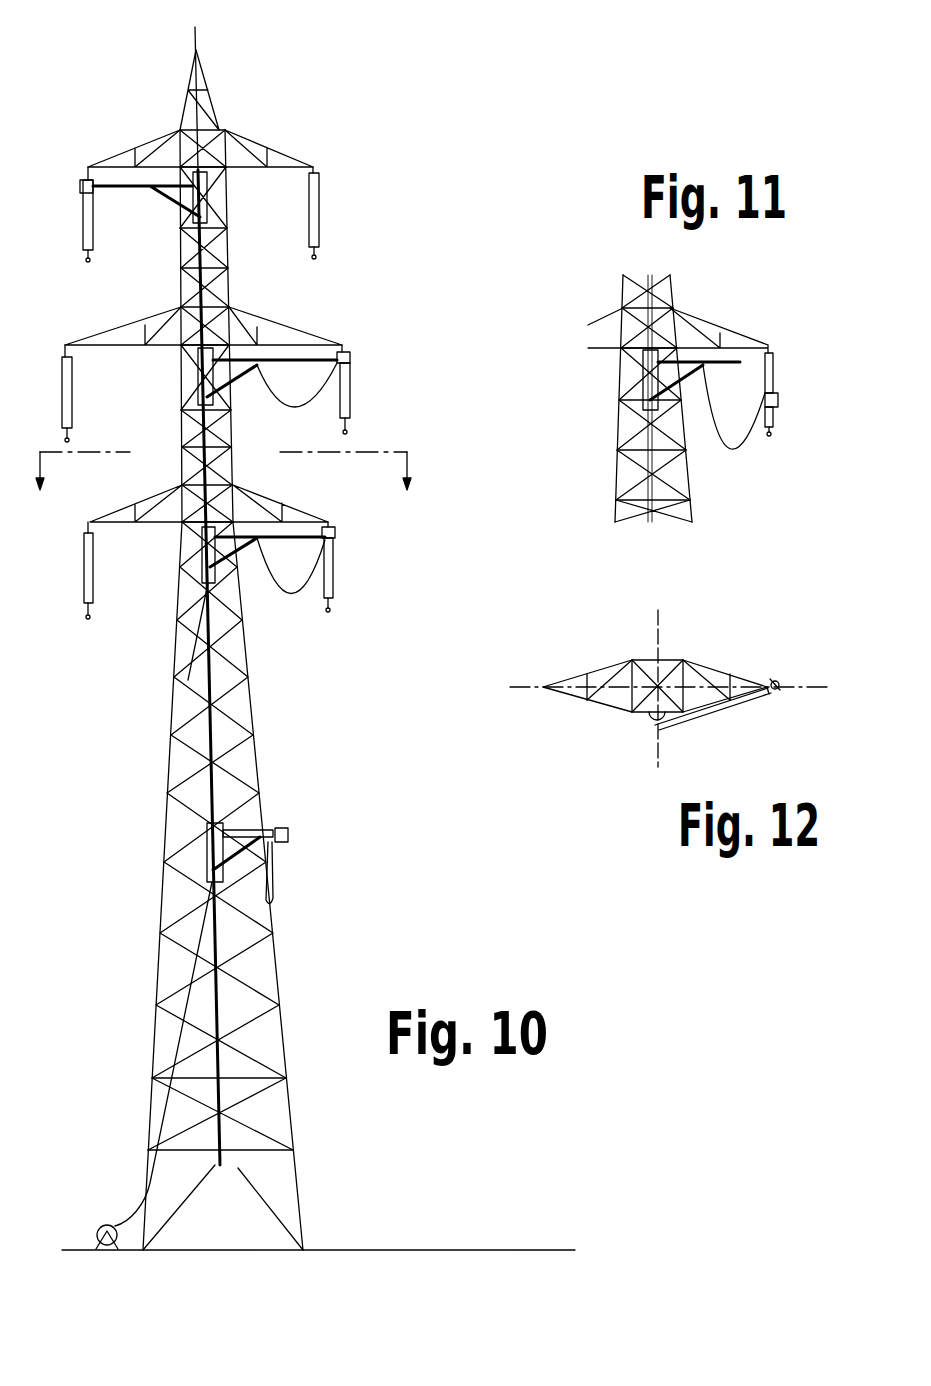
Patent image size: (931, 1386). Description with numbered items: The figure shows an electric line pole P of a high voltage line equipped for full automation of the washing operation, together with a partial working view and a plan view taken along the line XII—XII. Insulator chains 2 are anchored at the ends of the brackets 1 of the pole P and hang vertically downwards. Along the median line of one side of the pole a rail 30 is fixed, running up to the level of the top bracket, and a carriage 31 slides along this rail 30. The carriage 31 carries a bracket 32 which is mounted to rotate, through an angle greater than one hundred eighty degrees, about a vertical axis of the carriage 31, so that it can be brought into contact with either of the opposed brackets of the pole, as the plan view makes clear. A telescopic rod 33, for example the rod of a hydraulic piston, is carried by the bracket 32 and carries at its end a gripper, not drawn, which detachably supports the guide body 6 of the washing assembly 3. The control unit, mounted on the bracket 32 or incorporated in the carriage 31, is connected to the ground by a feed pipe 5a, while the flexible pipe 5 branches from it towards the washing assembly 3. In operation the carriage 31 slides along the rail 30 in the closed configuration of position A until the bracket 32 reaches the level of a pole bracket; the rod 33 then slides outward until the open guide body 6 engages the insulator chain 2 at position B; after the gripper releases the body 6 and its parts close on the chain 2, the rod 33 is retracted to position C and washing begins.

In FIG. 10, the bracket 1 is at (303, 520).
In FIG. 12, the bracket 1 is at (668, 688).
In FIG. 10, the insulator chain 2 is at (333, 580).
In FIG. 11, the insulator chain 2 is at (771, 394).
In FIG. 10, the washing assembly 3 is at (290, 836).
In FIG. 12, the washing assembly 3 is at (773, 681).
In FIG. 10, the flexible pipe 5 is at (291, 593).
In FIG. 11, the flexible pipe 5 is at (734, 407).
In FIG. 10, the feed pipe 5a is at (213, 968).
In FIG. 10, the guide body 6 is at (335, 532).
In FIG. 11, the guide body 6 is at (691, 380).
In FIG. 10, the rail 30 is at (206, 272).
In FIG. 11, the rail 30 is at (650, 398).
In FIG. 10, the carriage 31 is at (210, 843).
In FIG. 10, the bracket 32 is at (250, 827).
In FIG. 12, the telescopic rod 33 is at (740, 698).
In FIG. 10, the line pole P is at (290, 1107).
In FIG. 11, the line pole P is at (678, 398).
In FIG. 10, the position A is at (342, 857).
In FIG. 10, the position B is at (360, 567).
In FIG. 11, the position C is at (837, 400).
In FIG. 10, the line XII— XII is at (90, 491).